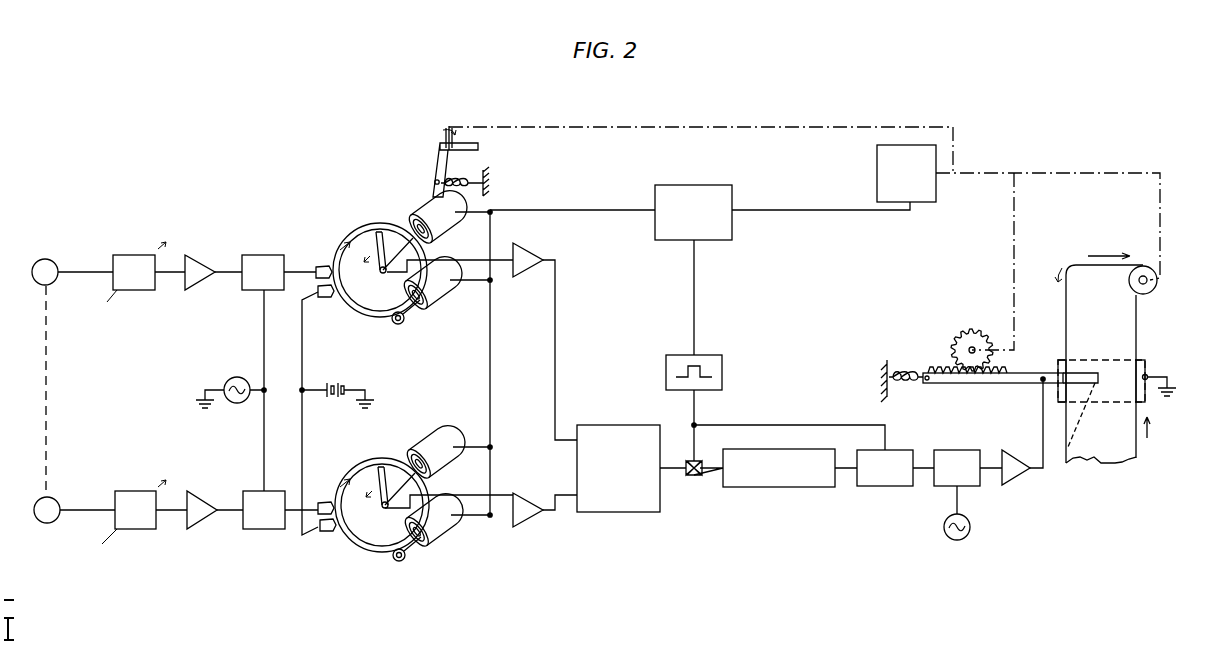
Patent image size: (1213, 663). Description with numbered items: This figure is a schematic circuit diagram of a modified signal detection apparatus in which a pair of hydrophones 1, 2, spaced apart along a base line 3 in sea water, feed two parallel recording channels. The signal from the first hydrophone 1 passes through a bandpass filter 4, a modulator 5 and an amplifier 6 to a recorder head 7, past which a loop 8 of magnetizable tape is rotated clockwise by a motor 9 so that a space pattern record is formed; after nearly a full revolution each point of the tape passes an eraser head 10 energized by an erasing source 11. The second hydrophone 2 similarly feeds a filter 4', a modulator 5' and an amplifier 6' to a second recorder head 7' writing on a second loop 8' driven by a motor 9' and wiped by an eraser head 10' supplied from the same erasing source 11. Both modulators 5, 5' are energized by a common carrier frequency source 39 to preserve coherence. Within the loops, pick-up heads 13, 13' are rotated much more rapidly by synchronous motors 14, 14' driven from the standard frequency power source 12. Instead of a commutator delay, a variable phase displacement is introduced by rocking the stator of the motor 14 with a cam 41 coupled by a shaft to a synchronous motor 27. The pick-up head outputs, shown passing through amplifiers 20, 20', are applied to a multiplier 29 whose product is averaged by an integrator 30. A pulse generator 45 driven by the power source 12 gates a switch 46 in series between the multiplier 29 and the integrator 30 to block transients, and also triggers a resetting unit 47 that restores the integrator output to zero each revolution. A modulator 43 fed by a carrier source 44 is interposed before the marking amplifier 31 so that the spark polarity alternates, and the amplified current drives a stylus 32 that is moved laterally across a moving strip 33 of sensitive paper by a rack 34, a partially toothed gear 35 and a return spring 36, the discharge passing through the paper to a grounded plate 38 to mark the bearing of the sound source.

The hydrophone 1 is at (47, 256).
The hydrophone 2 is at (52, 523).
The base line 3 is at (47, 382).
The bandpass filter 4 is at (136, 264).
The filter 4' is at (134, 503).
The modulator 5 is at (263, 258).
The modulator 5' is at (260, 496).
The amplifier 6 is at (200, 258).
The amplifier 6' is at (202, 496).
The recorder head 7 is at (326, 255).
The second recorder head 7' is at (326, 492).
The loop of magnetizable tape 8 is at (380, 250).
The second loop of magnetizable tape 8' is at (382, 491).
The motor 9 is at (441, 293).
The motor 9' is at (441, 530).
The eraser head 10 is at (318, 309).
The eraser head 10' is at (313, 544).
The erasing source 11 is at (335, 382).
The standard frequency power source 12 is at (712, 185).
The pick-up head 13 is at (375, 257).
The pick-up head 13' is at (376, 492).
The synchronous motor 14 is at (447, 222).
The synchronous motor 14' is at (446, 438).
The amplifier 20 is at (539, 254).
The amplifier 20' is at (530, 493).
The synchronous motor 27 is at (877, 156).
The multiplier 29 is at (604, 512).
The integrator 30 is at (762, 487).
The marking amplifier 31 is at (1012, 478).
The stylus 32 is at (1095, 387).
The strip of sensitive paper 33 is at (1120, 328).
The rack 34 is at (963, 384).
The gear 35 is at (975, 329).
The spring 36 is at (908, 368).
The plate 38 is at (1146, 366).
The common carrier frequency source 39 is at (240, 377).
The cam 41 is at (478, 146).
The modulator 43 is at (968, 450).
The carrier source 44 is at (958, 540).
The pulse generator 45 is at (722, 370).
The switch 46 is at (686, 462).
The resetting unit 47 is at (866, 486).